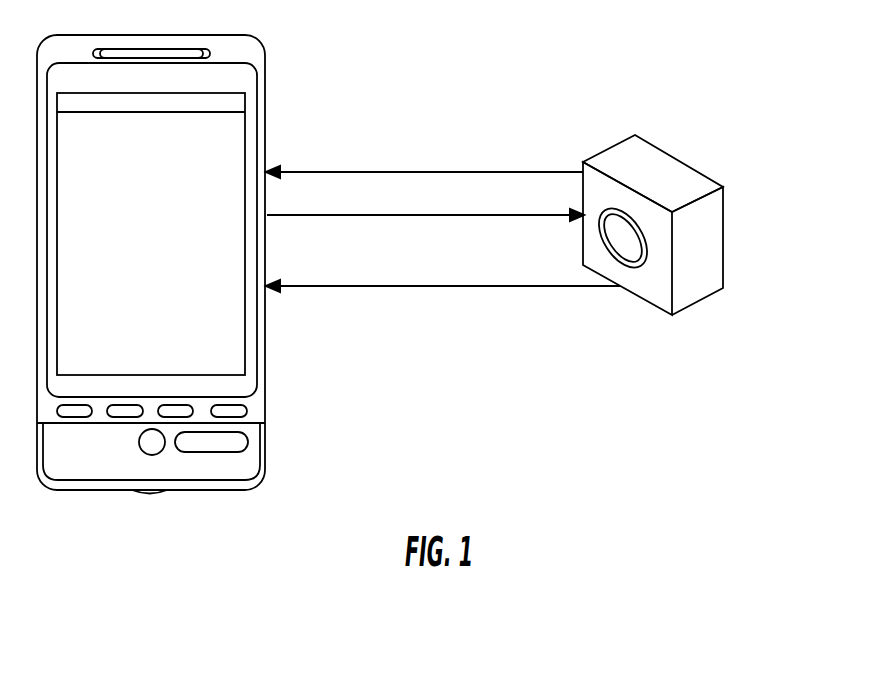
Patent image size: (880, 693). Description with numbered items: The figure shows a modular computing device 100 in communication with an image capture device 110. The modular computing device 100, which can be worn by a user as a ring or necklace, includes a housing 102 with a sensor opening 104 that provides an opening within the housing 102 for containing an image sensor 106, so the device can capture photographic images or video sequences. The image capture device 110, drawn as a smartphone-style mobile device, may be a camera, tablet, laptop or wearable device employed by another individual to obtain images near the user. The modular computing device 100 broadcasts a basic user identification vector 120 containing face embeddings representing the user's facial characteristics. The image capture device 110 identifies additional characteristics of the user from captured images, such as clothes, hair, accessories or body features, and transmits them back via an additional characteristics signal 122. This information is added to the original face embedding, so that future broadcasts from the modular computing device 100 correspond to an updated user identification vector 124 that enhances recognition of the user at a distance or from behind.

The modular computing device 100 is at (723, 242).
The housing 102 is at (670, 175).
The sensor opening 104 is at (648, 253).
The image sensor 106 is at (628, 250).
The image capture device 110 is at (265, 75).
The basic user identification vector 120 is at (573, 168).
The additional characteristics signal 122 is at (553, 218).
The updated user identification vector 124 is at (543, 287).